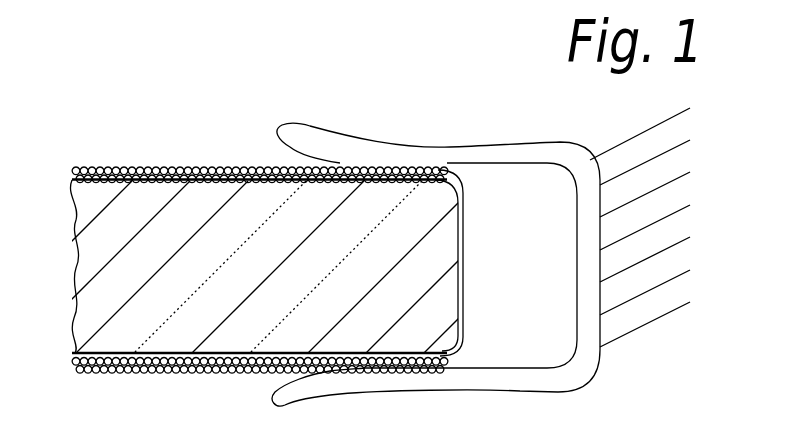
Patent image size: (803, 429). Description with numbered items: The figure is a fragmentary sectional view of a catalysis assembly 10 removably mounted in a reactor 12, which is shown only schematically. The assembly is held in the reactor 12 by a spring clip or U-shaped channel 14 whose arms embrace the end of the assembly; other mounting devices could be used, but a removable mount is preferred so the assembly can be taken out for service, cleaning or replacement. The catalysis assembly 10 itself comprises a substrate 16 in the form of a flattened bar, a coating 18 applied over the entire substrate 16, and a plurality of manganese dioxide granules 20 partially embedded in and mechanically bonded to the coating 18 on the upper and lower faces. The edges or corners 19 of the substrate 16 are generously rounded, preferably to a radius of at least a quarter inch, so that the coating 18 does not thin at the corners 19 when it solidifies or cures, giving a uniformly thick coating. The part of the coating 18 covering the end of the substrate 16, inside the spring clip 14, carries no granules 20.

The catalysis assembly 10 is at (194, 156).
The reactor 12 is at (672, 188).
The spring clip or U-shaped channel 14 is at (450, 155).
The substrate 16 is at (218, 260).
The coating 18 is at (467, 270).
The edges or corners 19 is at (447, 187).
The manganese dioxide granules 20 is at (153, 162).